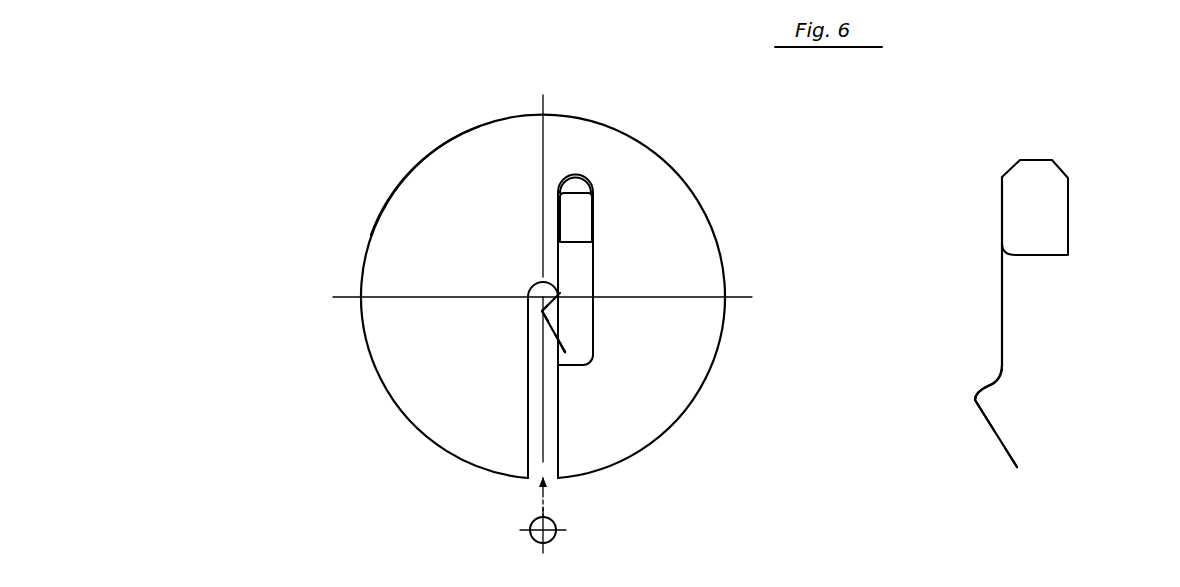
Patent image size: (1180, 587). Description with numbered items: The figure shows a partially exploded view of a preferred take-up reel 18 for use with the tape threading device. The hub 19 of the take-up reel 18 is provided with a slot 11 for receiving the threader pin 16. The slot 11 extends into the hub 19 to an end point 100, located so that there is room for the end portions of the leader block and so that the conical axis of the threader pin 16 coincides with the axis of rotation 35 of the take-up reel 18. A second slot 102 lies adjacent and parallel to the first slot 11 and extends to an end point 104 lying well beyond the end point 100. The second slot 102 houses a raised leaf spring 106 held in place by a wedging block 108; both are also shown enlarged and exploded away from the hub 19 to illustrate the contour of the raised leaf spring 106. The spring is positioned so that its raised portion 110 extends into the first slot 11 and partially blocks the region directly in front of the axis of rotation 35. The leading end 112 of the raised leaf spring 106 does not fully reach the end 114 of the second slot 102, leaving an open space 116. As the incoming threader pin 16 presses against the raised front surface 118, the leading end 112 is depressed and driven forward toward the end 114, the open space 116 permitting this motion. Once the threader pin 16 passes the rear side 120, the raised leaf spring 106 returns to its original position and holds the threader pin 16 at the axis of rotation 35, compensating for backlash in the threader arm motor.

The slot 11 is at (567, 430).
The threader pin 16 is at (553, 541).
The take-up reel 18 is at (679, 143).
The hub 19 is at (411, 170).
The axis of rotation 35 is at (530, 289).
The end point 100 is at (535, 278).
The second slot 102 is at (596, 275).
The end point 104 is at (581, 172).
The raised leaf spring 106 is at (550, 332).
The wedging block 108 is at (595, 215).
The raised portion 110 is at (540, 316).
The leading end 112 is at (567, 338).
The end 114 is at (575, 370).
The open space 116 is at (573, 352).
The raised front surface 118 is at (986, 426).
The rear side 120 is at (984, 372).